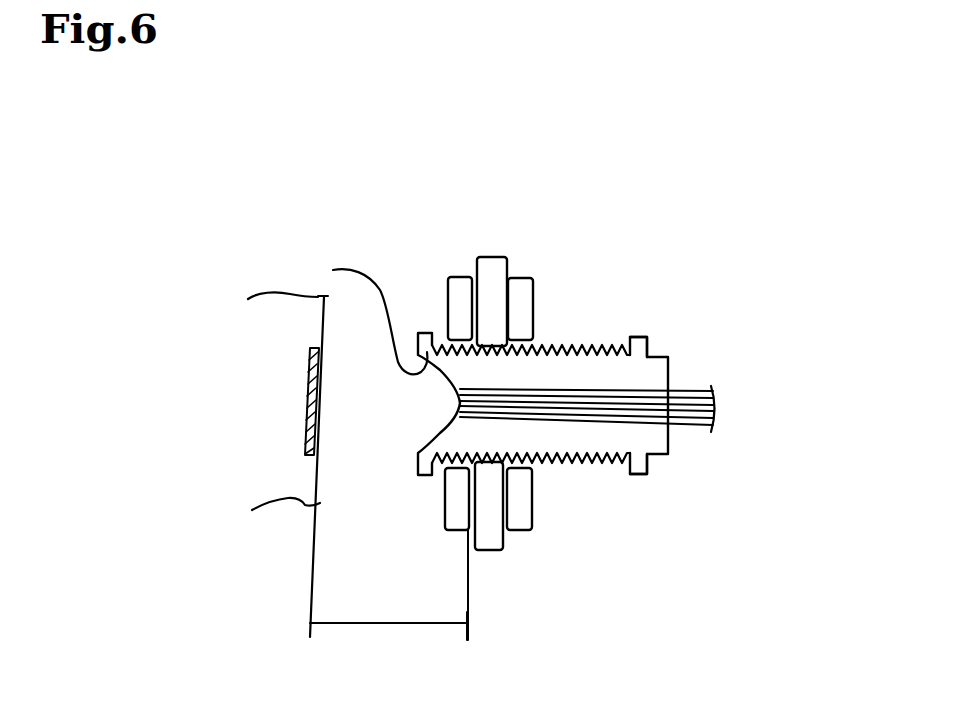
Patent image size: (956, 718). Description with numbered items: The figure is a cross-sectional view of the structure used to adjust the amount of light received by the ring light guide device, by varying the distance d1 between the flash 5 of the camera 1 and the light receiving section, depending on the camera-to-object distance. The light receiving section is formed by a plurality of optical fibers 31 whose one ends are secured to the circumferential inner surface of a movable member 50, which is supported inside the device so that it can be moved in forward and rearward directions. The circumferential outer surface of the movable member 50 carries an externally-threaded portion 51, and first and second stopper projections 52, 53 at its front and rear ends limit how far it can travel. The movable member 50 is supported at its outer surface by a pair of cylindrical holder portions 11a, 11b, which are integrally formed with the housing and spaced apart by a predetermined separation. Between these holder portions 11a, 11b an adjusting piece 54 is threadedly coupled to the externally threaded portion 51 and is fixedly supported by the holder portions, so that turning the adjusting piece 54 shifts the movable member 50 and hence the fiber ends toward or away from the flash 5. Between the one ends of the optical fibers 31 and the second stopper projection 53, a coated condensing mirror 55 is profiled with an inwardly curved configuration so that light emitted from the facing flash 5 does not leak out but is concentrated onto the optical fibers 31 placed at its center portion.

The camera 1 is at (289, 496).
The flash 5 is at (307, 381).
The cylindrical holder portion 11a is at (452, 277).
The cylindrical holder portion 11b is at (530, 278).
The optical fibers 31 is at (698, 392).
The movable member 50 is at (557, 404).
The externally-threaded portion 51 is at (578, 344).
The first stopper projection 52 is at (647, 338).
The second stopper projection 53 is at (418, 333).
The adjusting piece 54 is at (493, 257).
The condensing mirror 55 is at (363, 313).
The distance d1 is at (389, 585).